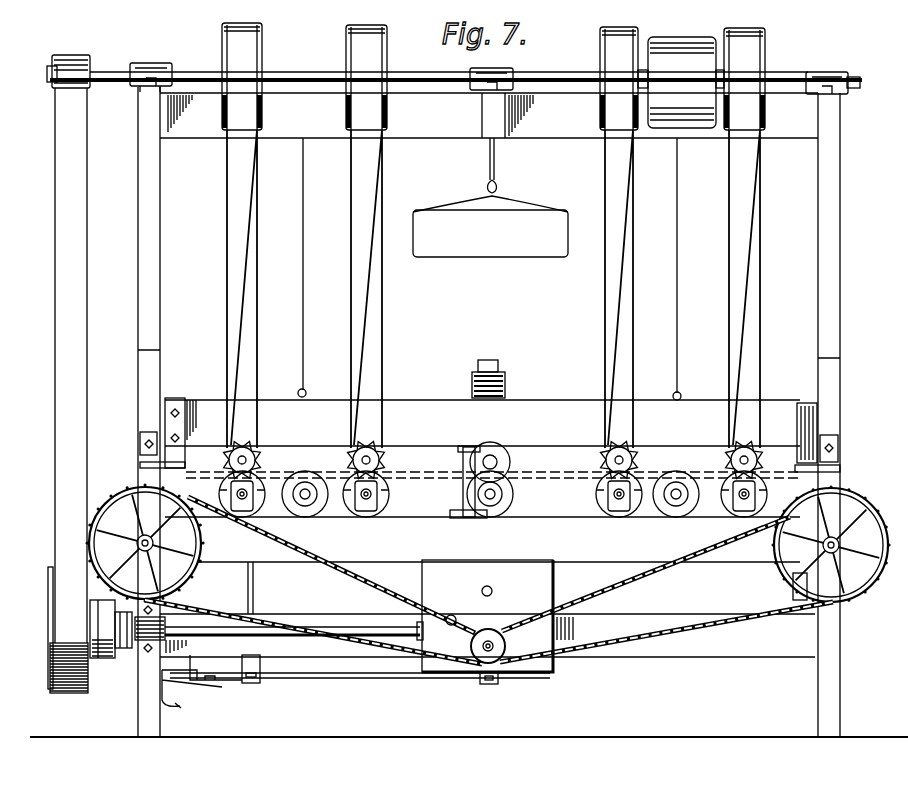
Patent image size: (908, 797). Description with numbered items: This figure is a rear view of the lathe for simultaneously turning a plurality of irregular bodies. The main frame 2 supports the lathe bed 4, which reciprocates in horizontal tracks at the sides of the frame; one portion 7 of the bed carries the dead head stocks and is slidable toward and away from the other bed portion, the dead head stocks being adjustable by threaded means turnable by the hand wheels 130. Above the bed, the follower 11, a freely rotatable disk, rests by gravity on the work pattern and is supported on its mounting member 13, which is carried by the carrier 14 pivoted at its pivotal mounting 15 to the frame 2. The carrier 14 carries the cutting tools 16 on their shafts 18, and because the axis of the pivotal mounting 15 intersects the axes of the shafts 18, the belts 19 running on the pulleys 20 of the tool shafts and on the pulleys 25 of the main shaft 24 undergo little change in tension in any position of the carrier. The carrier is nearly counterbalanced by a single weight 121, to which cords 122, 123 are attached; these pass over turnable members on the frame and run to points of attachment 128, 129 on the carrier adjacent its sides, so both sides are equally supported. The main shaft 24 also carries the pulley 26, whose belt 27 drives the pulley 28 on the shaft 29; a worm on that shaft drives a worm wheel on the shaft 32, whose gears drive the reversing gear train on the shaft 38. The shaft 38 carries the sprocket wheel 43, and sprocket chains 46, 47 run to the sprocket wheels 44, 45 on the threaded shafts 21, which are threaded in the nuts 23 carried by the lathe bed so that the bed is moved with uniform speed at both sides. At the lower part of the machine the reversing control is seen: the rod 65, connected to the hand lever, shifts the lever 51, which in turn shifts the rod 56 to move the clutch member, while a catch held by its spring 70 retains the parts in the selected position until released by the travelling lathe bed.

The main frame 2 is at (489, 412).
The lathe bed 4 is at (460, 549).
The lathe bed portion 7 is at (493, 510).
The follower 11 is at (512, 466).
The mounting member 13 is at (508, 446).
The carrier 14 is at (456, 428).
The pivotal mounting 15 is at (140, 462).
The cutting tools 16 is at (265, 464).
The tool shafts 18 is at (493, 489).
The belts 19 is at (233, 217).
The pulleys 20 is at (240, 448).
The threaded shafts 21 is at (136, 547).
The nuts 23 is at (604, 39).
The main shaft 24 is at (548, 76).
The pulleys 25 is at (262, 58).
The pulley 26 is at (95, 66).
The belt 27 is at (70, 374).
The pulley 28 is at (48, 585).
The shaft 29 is at (255, 632).
The shaft 32 is at (491, 588).
The shaft 38 is at (506, 641).
The sprocket wheel 43 is at (471, 643).
The sprocket wheel 44 is at (201, 552).
The sprocket wheel 45 is at (773, 543).
The sprocket chain 46 is at (371, 577).
The sprocket chain 47 is at (632, 565).
The lever 51 is at (331, 677).
The rod 56 is at (251, 683).
The rod 65 is at (240, 661).
The spring 70 is at (186, 706).
The weight 121 is at (506, 243).
The cord 122 is at (289, 264).
The cord 123 is at (662, 265).
The point of attachment 128 is at (304, 390).
The point of attachment 129 is at (680, 392).
The hand wheels 130 is at (219, 491).